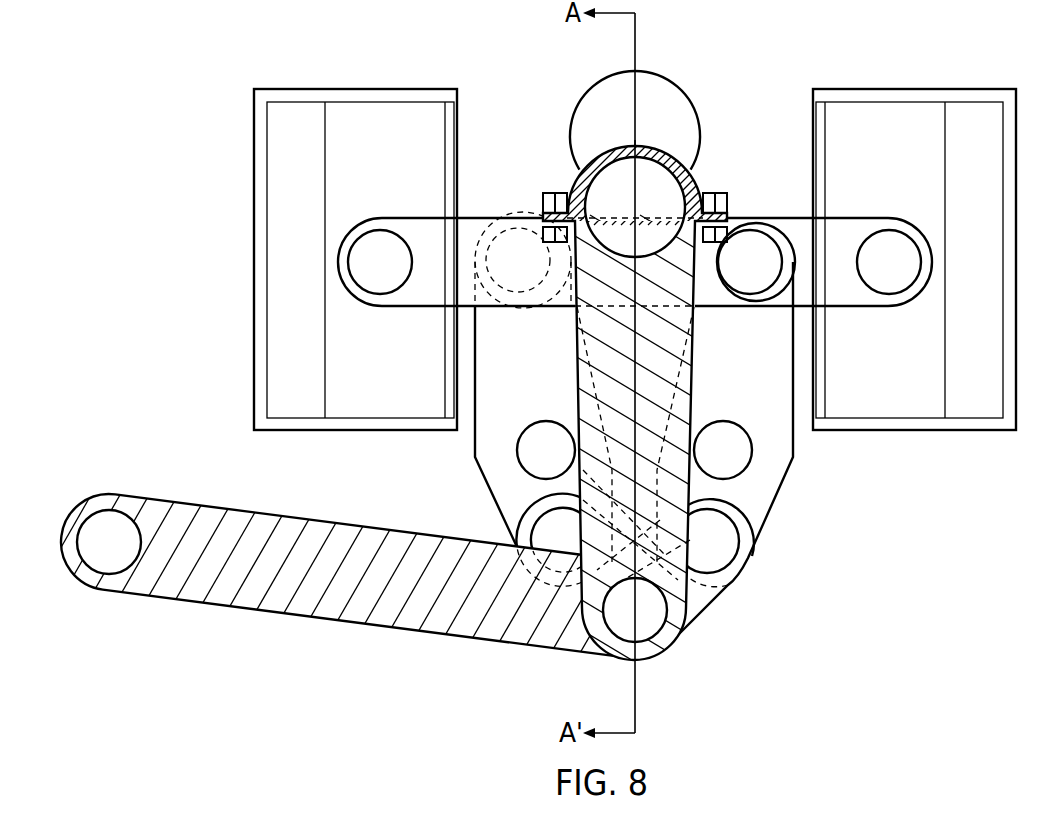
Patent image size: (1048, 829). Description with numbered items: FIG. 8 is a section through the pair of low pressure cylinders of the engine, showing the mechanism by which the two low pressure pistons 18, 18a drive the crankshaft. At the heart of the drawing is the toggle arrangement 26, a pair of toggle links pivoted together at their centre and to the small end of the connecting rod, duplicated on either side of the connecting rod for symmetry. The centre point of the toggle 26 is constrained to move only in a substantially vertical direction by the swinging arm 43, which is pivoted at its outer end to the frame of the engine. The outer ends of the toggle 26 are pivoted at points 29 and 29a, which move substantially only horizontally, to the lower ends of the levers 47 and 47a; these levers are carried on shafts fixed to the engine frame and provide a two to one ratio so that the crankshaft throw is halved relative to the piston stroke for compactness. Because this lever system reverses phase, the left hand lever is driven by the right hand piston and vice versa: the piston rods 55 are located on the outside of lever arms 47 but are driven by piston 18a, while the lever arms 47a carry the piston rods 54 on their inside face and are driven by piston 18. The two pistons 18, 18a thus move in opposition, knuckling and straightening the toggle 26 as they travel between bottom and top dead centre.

The piston 18 is at (367, 117).
The piston 18a is at (874, 115).
The piston rod 54 is at (463, 228).
The piston rod 55 is at (795, 222).
The lever 47 is at (493, 452).
The lever 47a is at (775, 472).
The pivot point 29 is at (567, 600).
The pivot point 29a is at (758, 550).
The swinging arm 43 is at (337, 607).
The toggle arrangement 26 is at (712, 650).